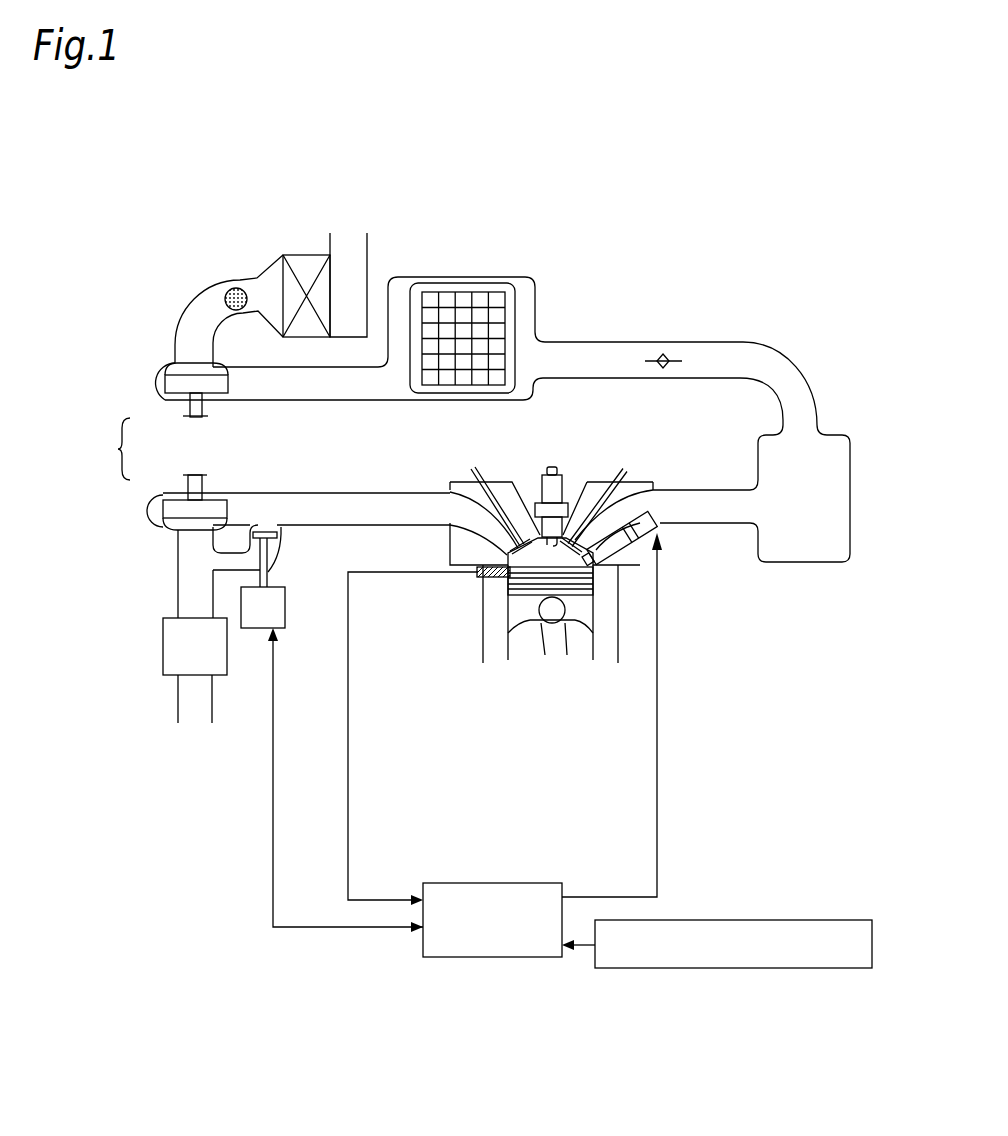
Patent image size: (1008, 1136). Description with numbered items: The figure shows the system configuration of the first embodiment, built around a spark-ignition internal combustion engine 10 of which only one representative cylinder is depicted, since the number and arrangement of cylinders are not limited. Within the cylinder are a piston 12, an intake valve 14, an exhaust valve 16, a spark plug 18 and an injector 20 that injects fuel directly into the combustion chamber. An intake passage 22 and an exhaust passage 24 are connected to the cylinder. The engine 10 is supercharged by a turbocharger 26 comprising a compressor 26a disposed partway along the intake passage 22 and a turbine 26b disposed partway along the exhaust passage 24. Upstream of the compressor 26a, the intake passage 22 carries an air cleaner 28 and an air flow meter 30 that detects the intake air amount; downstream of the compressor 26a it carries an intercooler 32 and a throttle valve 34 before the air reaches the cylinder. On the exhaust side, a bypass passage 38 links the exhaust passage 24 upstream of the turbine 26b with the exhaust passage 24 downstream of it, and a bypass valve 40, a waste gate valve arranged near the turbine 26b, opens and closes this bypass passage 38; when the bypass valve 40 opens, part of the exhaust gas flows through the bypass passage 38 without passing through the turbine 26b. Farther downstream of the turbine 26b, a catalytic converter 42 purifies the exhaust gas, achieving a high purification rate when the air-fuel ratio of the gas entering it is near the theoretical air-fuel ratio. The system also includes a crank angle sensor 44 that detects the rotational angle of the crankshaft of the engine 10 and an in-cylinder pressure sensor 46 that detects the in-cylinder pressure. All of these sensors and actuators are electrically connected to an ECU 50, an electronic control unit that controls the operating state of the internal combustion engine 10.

The internal combustion engine 10 is at (477, 645).
The piston 12 is at (525, 615).
The intake valve 14 is at (573, 513).
The exhaust valve 16 is at (518, 517).
The spark plug 18 is at (549, 466).
The injector 20 is at (617, 552).
The intake passage 22 is at (720, 343).
The exhaust passage 24 is at (315, 492).
The turbocharger 26 is at (109, 449).
The compressor 26a is at (185, 403).
The turbine 26b is at (172, 494).
The air cleaner 28 is at (273, 253).
The air flow meter 30 is at (223, 288).
The intercooler 32 is at (462, 300).
The throttle valve 34 is at (663, 353).
The bypass passage 38 is at (228, 575).
The bypass valve 40 is at (270, 576).
The catalytic converter 42 is at (220, 677).
The crank angle sensor 44 is at (743, 920).
The in-cylinder pressure sensor 46 is at (478, 575).
The ECU 50 is at (507, 883).